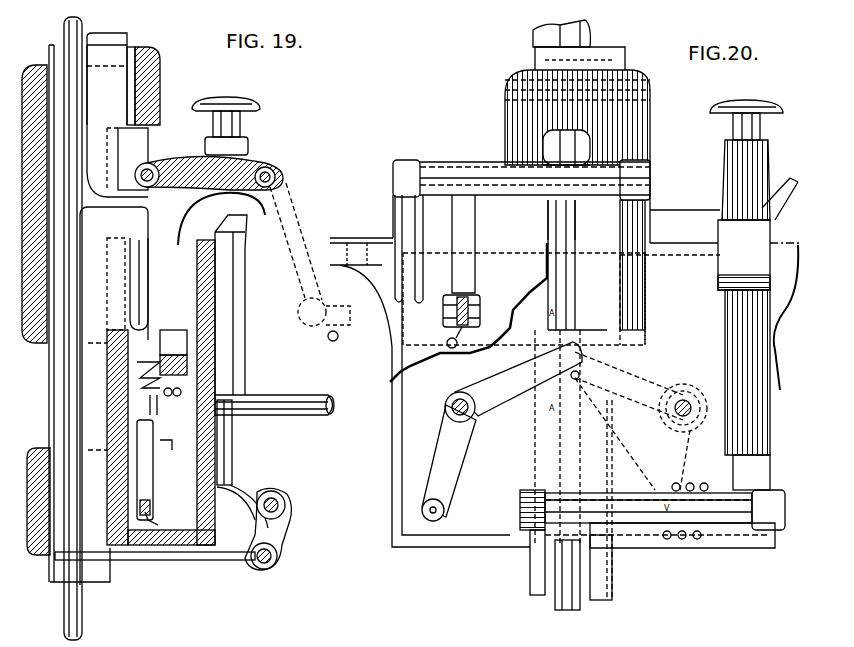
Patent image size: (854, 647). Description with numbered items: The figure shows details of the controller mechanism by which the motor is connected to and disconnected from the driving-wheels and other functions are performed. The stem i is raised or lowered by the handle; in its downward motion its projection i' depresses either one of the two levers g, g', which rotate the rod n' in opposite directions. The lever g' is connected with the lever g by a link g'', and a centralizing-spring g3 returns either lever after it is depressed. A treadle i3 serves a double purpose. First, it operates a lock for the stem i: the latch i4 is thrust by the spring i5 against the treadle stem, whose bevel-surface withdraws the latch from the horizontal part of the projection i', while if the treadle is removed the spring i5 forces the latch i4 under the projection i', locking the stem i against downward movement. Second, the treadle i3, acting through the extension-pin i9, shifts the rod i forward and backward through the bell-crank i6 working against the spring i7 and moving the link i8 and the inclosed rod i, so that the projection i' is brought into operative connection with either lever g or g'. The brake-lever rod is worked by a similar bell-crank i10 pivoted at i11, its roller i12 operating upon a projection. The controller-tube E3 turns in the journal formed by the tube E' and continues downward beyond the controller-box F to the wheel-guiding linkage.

In FIG. 19, the stem i is at (72, 328).
In FIG. 20, the stem i is at (561, 33).
In FIG. 19, the controller-tube E3 is at (105, 45).
In FIG. 20, the controller-tube E3 is at (614, 48).
In FIG. 19, the tube E' is at (145, 86).
In FIG. 20, the tube E' is at (598, 58).
In FIG. 19, the treadle i3 is at (241, 117).
In FIG. 20, the treadle i3 is at (753, 285).
In FIG. 19, the bell-crank i10 is at (187, 162).
In FIG. 20, the bell-crank i10 is at (521, 165).
In FIG. 19, the pivot i11 is at (278, 165).
In FIG. 20, the pivot i11 is at (562, 220).
In FIG. 19, the roller i12 is at (127, 159).
In FIG. 19, the latch i4 is at (112, 240).
In FIG. 20, the latch i4 is at (692, 243).
In FIG. 19, the projection i' is at (152, 284).
In FIG. 19, the lever g is at (138, 407).
In FIG. 20, the lever g is at (632, 421).
In FIG. 19, the centralizing-spring g3 is at (167, 443).
In FIG. 19, the link g'' is at (161, 516).
In FIG. 20, the link g'' is at (451, 463).
In FIG. 20, the lever g' is at (513, 382).
In FIG. 19, the controller-box F is at (239, 305).
In FIG. 20, the controller-box F is at (670, 253).
In FIG. 19, the rod n' is at (274, 419).
In FIG. 20, the rod n' is at (683, 395).
In FIG. 19, the extension-pin i9 is at (239, 468).
In FIG. 19, the spring i7 is at (283, 490).
In FIG. 20, the spring i7 is at (697, 540).
In FIG. 19, the bell-crank i6 is at (286, 536).
In FIG. 20, the bell-crank i6 is at (461, 305).
In FIG. 19, the link i8 is at (163, 561).
In FIG. 20, the spring i5 is at (792, 177).